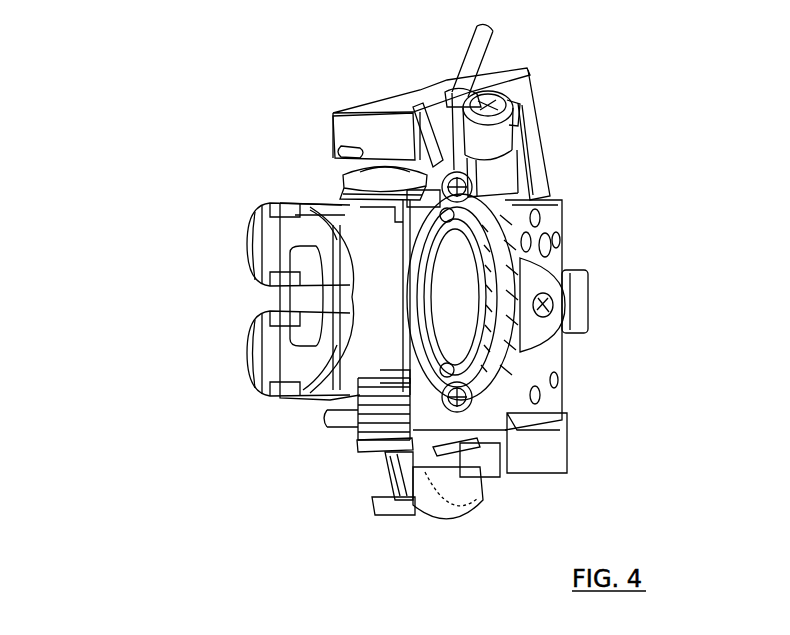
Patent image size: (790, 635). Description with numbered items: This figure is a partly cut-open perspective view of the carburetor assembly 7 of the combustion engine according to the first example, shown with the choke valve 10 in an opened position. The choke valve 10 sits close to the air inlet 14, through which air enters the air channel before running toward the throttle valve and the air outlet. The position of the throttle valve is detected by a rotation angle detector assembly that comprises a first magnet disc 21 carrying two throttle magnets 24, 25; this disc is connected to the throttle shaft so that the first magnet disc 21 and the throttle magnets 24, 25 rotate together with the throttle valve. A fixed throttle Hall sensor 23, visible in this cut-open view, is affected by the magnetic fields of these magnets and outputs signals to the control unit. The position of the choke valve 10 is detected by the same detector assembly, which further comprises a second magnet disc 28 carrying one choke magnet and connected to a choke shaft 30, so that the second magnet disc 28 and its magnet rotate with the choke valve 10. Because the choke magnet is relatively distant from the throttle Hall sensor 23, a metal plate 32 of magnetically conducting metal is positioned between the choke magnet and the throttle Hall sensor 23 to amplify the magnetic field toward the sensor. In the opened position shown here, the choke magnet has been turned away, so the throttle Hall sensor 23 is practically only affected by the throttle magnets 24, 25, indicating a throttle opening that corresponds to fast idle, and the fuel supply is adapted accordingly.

The carburetor assembly 7 is at (191, 108).
The throttle Hall sensor 23 is at (337, 156).
The metal plate 32 is at (412, 107).
The second magnet disc 28 is at (527, 117).
The choke shaft 30 is at (502, 173).
The air inlet 14 is at (556, 288).
The choke valve 10 is at (540, 327).
The throttle magnet 24 is at (343, 173).
The first magnet disc 21 is at (340, 190).
The throttle magnet 25 is at (408, 170).